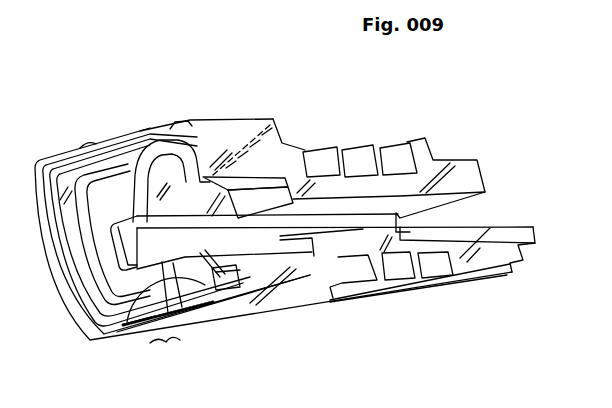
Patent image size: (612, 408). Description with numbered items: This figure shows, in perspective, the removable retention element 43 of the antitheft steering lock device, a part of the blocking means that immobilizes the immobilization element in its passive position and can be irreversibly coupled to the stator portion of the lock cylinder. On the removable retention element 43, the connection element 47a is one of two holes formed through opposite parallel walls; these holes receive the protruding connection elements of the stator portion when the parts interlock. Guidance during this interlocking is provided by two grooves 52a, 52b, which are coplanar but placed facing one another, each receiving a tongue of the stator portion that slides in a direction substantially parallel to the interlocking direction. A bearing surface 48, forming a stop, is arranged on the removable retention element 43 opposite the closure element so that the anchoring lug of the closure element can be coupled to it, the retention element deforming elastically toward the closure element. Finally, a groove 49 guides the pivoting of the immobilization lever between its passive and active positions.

The removable retention element 43 is at (487, 180).
The connection element 47a is at (65, 167).
The bearing surface 48 is at (536, 248).
The groove 49 is at (350, 207).
The groove 52a is at (121, 142).
The groove 52b is at (143, 272).